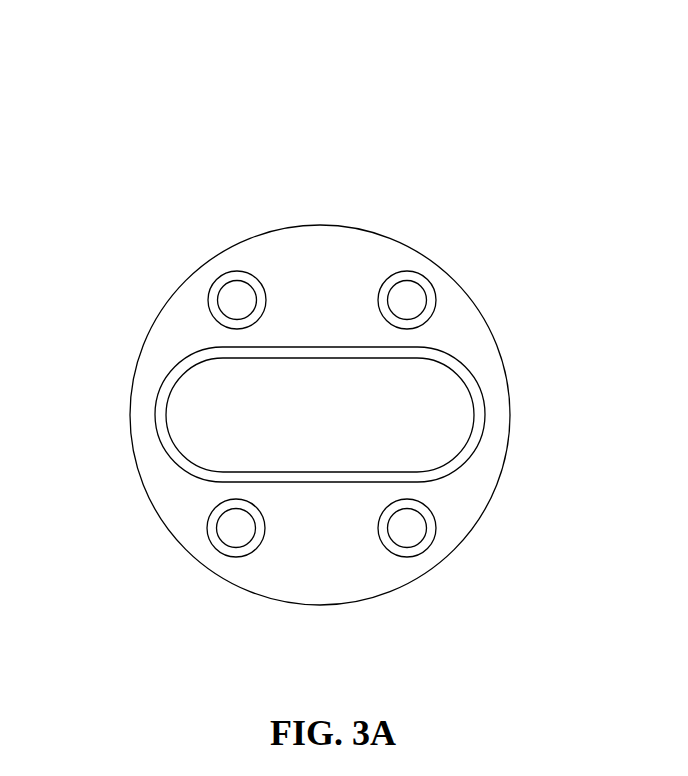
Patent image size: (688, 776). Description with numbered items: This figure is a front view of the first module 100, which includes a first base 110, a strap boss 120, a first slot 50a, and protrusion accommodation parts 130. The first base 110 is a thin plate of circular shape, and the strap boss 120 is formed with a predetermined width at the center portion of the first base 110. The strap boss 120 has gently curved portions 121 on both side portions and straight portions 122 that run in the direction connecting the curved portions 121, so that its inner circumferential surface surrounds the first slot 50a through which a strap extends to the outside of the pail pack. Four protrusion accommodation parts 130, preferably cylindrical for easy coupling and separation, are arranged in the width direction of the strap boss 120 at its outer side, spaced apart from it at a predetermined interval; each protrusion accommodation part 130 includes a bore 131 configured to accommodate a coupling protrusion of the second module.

The first module 100 is at (134, 181).
The first base 110 is at (470, 348).
The strap boss 120 is at (320, 369).
The curved portions 121 is at (160, 415).
The straight portions 122 is at (277, 477).
The protrusion accommodation part 130 is at (235, 272).
The bore 131 is at (237, 300).
The first slot 50a is at (445, 422).